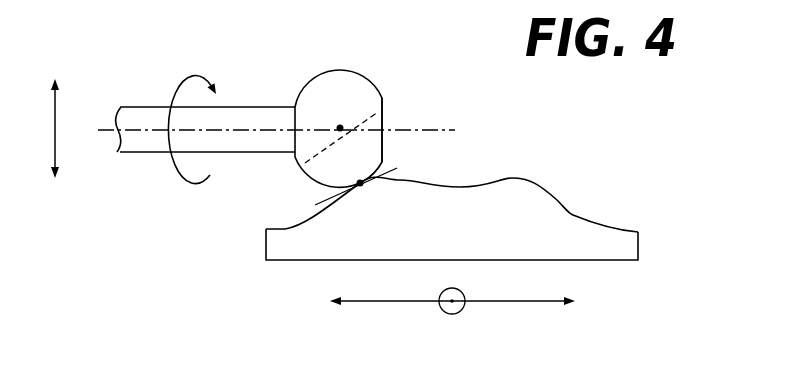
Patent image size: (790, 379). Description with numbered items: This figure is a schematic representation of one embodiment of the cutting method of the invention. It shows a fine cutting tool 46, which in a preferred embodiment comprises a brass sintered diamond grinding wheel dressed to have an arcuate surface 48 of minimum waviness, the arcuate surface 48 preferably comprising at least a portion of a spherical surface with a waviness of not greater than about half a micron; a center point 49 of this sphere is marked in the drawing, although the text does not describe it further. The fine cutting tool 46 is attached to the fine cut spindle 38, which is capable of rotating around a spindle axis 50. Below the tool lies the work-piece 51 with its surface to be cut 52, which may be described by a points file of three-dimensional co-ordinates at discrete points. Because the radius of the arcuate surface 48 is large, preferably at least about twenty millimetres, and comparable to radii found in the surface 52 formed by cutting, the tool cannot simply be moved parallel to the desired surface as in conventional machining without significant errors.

The fine cut spindle 38 is at (248, 107).
The fine cutting tool 46 is at (385, 117).
The arcuate surface 48 is at (348, 70).
The ball center 49 is at (340, 128).
The spindle axis 50 is at (238, 140).
The work-piece 51 is at (537, 225).
The surface to be cut 52 is at (573, 213).